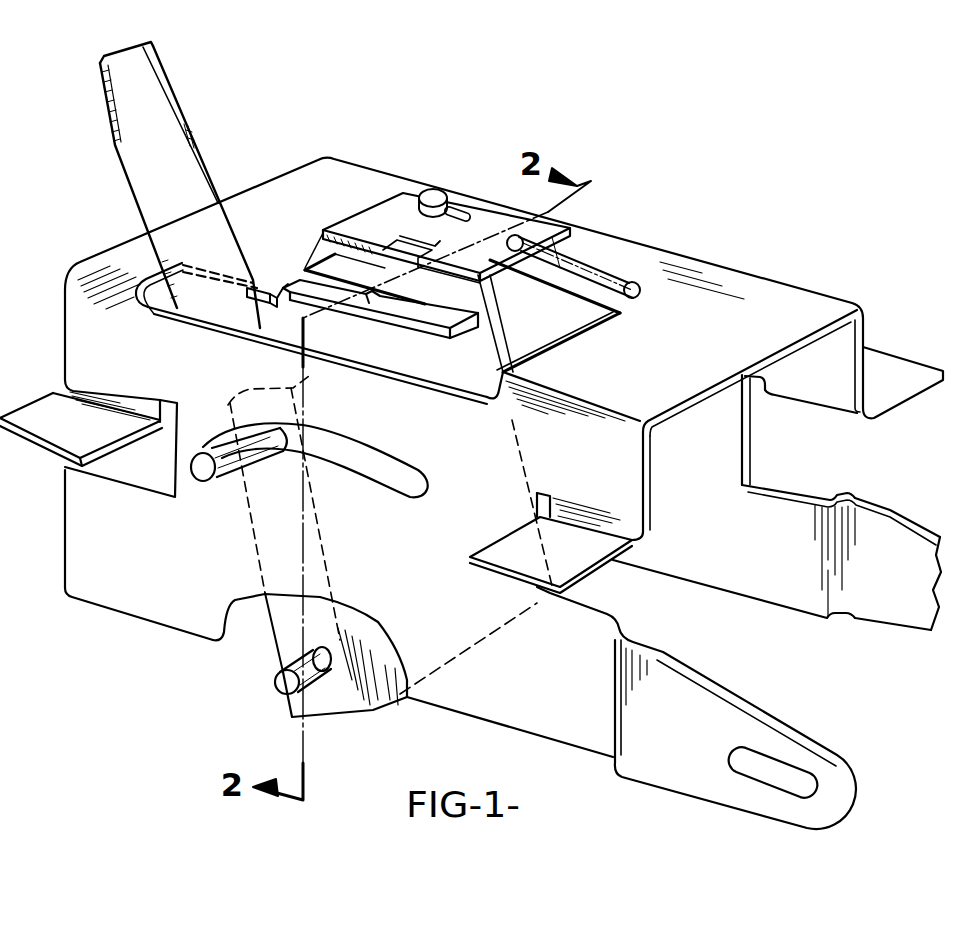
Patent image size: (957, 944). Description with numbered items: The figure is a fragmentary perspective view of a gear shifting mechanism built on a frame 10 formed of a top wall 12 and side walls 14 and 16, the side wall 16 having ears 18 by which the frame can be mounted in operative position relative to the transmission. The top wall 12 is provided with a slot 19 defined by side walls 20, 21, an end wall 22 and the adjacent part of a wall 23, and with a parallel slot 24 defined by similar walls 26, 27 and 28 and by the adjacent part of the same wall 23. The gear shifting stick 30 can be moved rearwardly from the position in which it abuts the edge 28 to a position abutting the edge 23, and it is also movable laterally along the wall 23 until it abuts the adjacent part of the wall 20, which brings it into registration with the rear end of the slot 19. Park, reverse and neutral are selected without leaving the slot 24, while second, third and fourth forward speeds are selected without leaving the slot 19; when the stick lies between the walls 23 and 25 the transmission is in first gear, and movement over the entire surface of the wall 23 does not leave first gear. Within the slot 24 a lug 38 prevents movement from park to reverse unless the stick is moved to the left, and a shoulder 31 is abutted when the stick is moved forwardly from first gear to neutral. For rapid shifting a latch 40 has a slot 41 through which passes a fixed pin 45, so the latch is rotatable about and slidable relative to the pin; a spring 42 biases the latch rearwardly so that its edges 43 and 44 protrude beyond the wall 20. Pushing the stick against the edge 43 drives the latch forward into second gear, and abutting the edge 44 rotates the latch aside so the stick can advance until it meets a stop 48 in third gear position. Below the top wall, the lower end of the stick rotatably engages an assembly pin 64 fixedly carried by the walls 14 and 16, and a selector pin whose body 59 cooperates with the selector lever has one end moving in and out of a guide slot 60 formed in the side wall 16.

The frame 10 is at (818, 284).
The top wall 12 is at (744, 307).
The side wall 14 is at (731, 452).
The side wall 16 is at (622, 505).
The ears 18 is at (900, 614).
The slot 19 is at (387, 278).
The side wall of slot 20 is at (541, 288).
The side wall of slot 21 is at (477, 303).
The end wall 22 is at (328, 257).
The wall 23 is at (560, 343).
The slot 24 is at (301, 329).
The wall 25 is at (463, 331).
The wall 26 is at (318, 300).
The wall 27 is at (236, 312).
The wall 28 is at (147, 280).
The gear shifting stick 30 is at (163, 118).
The shoulder 31 is at (367, 306).
The lug 38 is at (262, 288).
The latch 40 is at (483, 206).
The slot 41 is at (460, 212).
The spring 42 is at (594, 253).
The edge 43 is at (525, 242).
The edge 44 is at (459, 260).
The fixed pin 45 is at (432, 194).
The stop 48 is at (424, 240).
The body 59 is at (205, 475).
The guide slot 60 is at (407, 472).
The assembly pin 64 is at (320, 707).